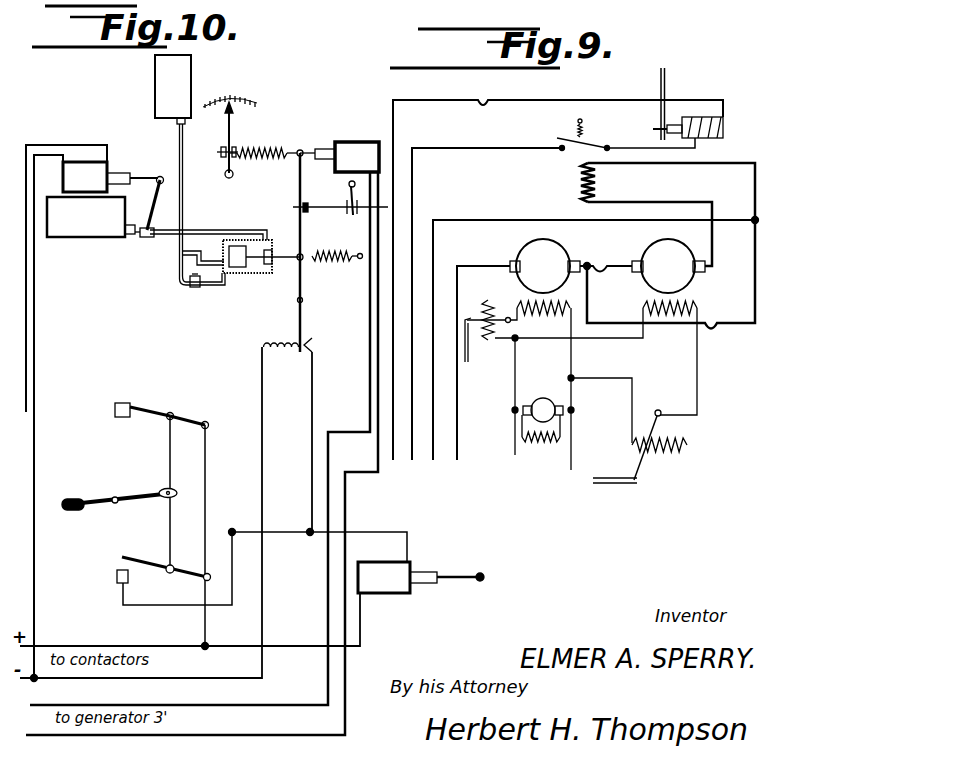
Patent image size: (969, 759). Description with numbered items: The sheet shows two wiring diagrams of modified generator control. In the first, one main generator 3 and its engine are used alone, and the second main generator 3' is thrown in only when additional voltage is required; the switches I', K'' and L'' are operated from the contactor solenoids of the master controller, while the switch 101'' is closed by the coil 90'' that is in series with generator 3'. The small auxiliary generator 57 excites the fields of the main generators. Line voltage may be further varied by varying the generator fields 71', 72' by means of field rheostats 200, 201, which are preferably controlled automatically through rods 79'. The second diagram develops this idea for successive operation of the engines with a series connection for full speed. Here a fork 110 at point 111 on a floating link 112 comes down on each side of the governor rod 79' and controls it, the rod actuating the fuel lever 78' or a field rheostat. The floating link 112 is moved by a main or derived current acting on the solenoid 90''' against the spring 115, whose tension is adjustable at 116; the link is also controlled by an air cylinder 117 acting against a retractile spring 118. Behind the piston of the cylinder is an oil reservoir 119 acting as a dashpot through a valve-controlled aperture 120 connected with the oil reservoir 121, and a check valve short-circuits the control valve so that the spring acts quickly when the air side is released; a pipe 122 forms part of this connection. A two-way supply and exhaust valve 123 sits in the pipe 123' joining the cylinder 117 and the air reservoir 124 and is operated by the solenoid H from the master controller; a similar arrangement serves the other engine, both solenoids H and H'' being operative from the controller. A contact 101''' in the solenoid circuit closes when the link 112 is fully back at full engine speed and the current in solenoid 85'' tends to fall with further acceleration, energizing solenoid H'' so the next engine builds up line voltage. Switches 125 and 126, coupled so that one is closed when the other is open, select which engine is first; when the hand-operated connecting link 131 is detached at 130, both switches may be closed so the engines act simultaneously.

In FIG. 10, the oil reservoir 121 is at (190, 170).
In FIG. 10, the air reservoir 124 is at (91, 217).
In FIG. 10, the two way supply and exhaust valve 123 is at (130, 231).
In FIG. 10, the pipe 123' is at (158, 244).
In FIG. 10, the oil reservoir 119 is at (232, 246).
In FIG. 10, the air cylinder 117 is at (265, 264).
In FIG. 10, the pipe 122 is at (203, 248).
In FIG. 10, the valve controlled aperture 120 is at (194, 289).
In FIG. 10, the retractile spring 118 is at (244, 290).
In FIG. 10, the floating link 112 is at (297, 180).
In FIG. 10, the solenoid 90''' is at (339, 143).
In FIG. 10, the fork 110 is at (296, 214).
In FIG. 10, the point 111 is at (317, 230).
In FIG. 10, the governor rod 79' is at (340, 220).
In FIG. 9, the governor rod 79' is at (551, 414).
In FIG. 10, the fuel lever 78' is at (336, 196).
In FIG. 10, the tension adjustment 116 is at (224, 136).
In FIG. 10, the spring 115 is at (263, 141).
In FIG. 10, the contact 101''' is at (313, 424).
In FIG. 10, the switch 126 is at (153, 512).
In FIG. 10, the hand operated connecting link 131 is at (168, 460).
In FIG. 10, the detachment point 130 is at (166, 558).
In FIG. 10, the switch 125 is at (117, 578).
In FIG. 10, the solenoid H is at (110, 177).
In FIG. 10, the solenoid H'' is at (421, 577).
In FIG. 9, the contactor switch I' is at (477, 86).
In FIG. 9, the solenoid 85'' is at (683, 108).
In FIG. 9, the switch 101'' is at (564, 144).
In FIG. 9, the coil 90'' is at (670, 246).
In FIG. 9, the contactor switch L'' is at (722, 345).
In FIG. 9, the main generator 3 is at (545, 266).
In FIG. 9, the main generator 3' is at (668, 266).
In FIG. 9, the contactor switch K'' is at (606, 256).
In FIG. 9, the generator field 71' is at (539, 385).
In FIG. 9, the generator field 72' is at (613, 347).
In FIG. 9, the field rheostat 200 is at (485, 308).
In FIG. 9, the auxiliary generator 57 is at (546, 412).
In FIG. 9, the field rheostat 201 is at (633, 427).